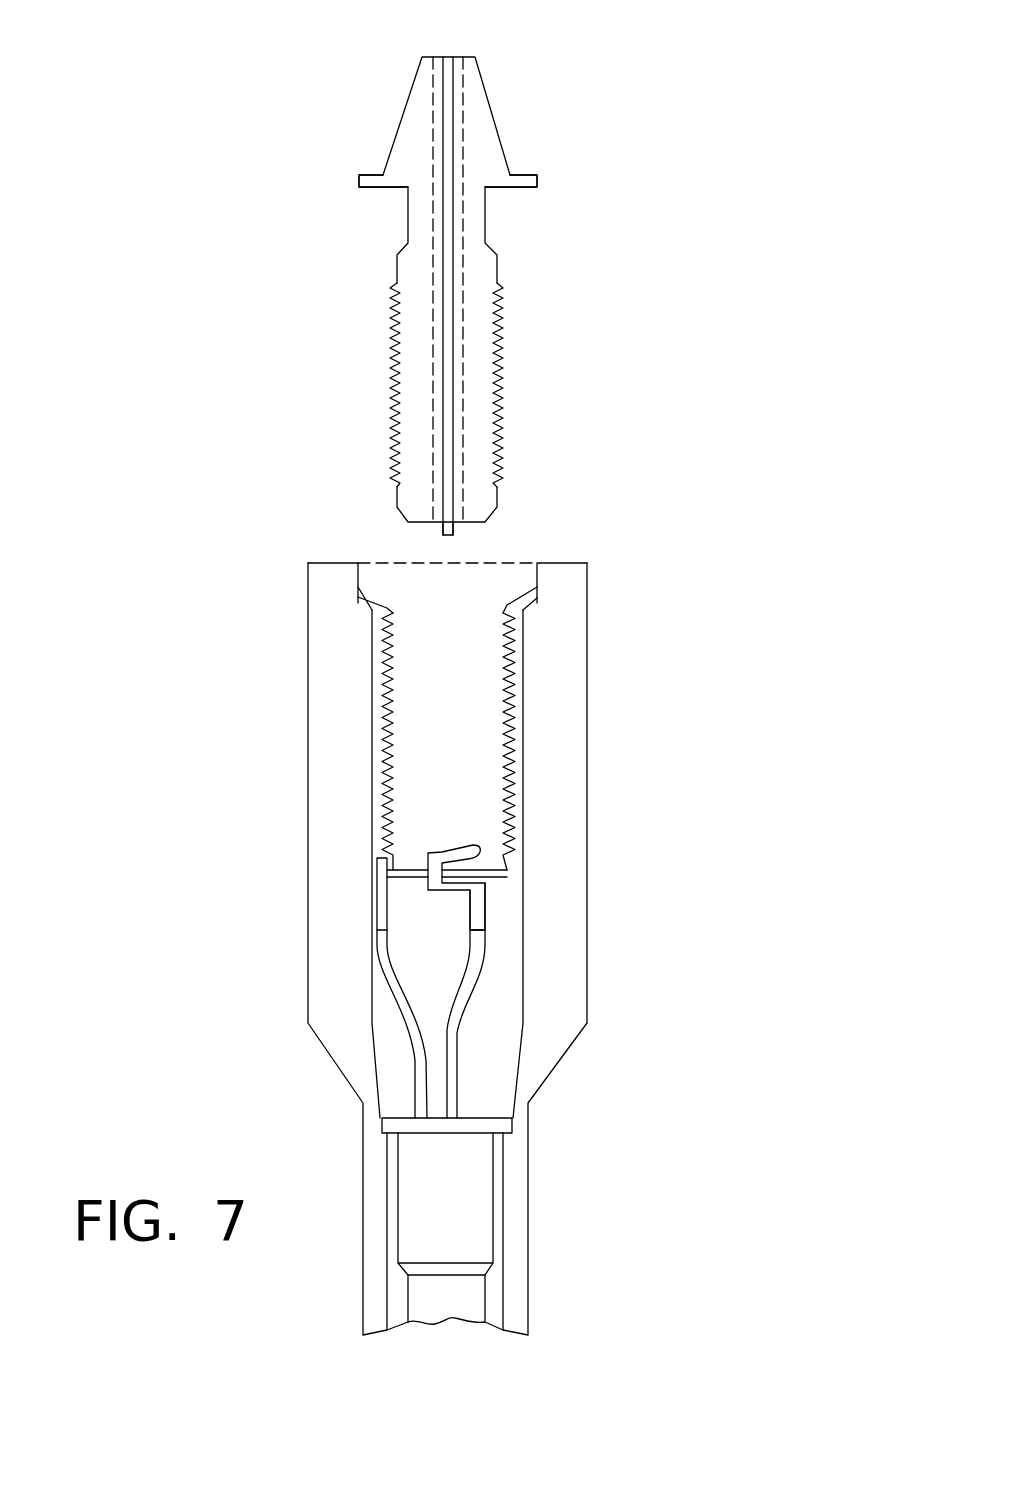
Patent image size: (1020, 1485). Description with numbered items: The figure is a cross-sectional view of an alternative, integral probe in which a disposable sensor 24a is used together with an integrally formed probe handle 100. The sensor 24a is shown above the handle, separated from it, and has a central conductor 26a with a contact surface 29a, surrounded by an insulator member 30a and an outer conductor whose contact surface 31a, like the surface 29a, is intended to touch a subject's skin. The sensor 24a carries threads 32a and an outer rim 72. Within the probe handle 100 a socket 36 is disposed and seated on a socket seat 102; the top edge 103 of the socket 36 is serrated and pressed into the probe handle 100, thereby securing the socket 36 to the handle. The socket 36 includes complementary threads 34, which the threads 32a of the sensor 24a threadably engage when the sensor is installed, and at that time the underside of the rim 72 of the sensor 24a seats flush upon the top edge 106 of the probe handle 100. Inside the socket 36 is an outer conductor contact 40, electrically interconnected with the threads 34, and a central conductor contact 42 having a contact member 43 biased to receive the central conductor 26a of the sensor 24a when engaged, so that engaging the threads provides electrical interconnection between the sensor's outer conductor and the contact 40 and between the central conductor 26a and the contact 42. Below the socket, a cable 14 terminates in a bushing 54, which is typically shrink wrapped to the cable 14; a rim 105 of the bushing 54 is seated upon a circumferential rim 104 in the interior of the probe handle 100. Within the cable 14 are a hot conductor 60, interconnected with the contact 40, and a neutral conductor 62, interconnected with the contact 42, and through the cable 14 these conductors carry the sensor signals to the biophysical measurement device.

The sensor 24a is at (552, 152).
The contact surface of central conductor 29a is at (450, 55).
The insulator member 30a is at (437, 55).
The contact surface of outer conductor 31a is at (469, 54).
The outer rim 72 is at (368, 188).
The threads 32a is at (390, 353).
The central conductor 26a is at (450, 537).
The probe handle 100 is at (267, 680).
The top edge 106 is at (323, 563).
The top edge 103 is at (378, 600).
The socket seat 102 is at (528, 607).
The threads 34 is at (515, 662).
The socket 36 is at (517, 758).
The contact member 43 is at (455, 852).
The outer conductor contact 40 is at (377, 892).
The central conductor contact 42 is at (475, 908).
The conductor 60 is at (407, 1010).
The neutral conductor 62 is at (470, 998).
The rim 105 is at (487, 1122).
The circumferential rim 104 is at (510, 1133).
The bushing 54 is at (453, 1217).
The cable 14 is at (453, 1298).